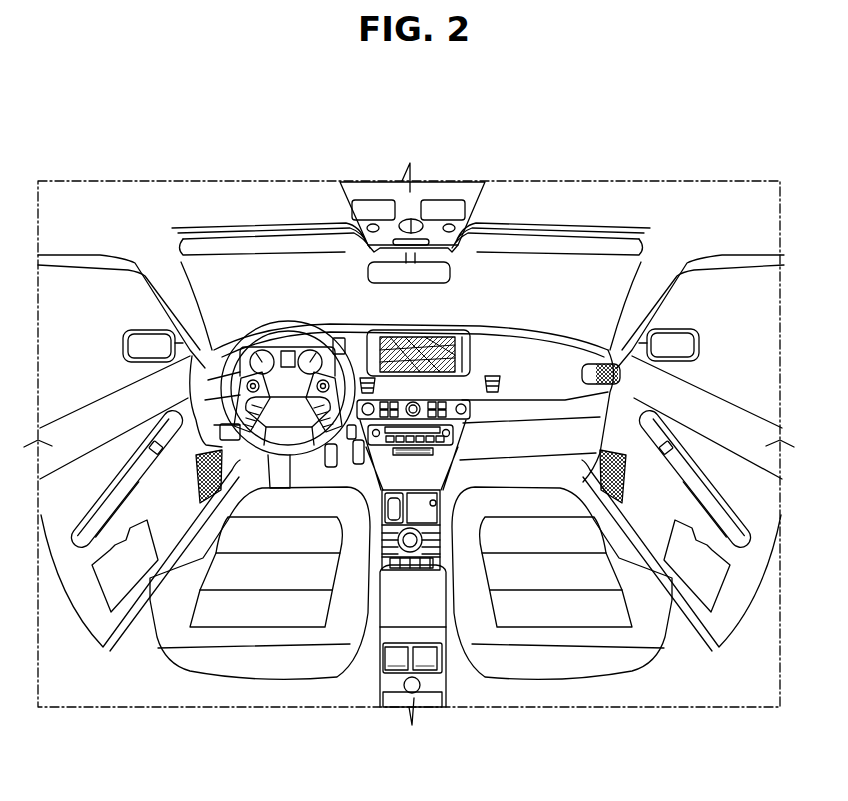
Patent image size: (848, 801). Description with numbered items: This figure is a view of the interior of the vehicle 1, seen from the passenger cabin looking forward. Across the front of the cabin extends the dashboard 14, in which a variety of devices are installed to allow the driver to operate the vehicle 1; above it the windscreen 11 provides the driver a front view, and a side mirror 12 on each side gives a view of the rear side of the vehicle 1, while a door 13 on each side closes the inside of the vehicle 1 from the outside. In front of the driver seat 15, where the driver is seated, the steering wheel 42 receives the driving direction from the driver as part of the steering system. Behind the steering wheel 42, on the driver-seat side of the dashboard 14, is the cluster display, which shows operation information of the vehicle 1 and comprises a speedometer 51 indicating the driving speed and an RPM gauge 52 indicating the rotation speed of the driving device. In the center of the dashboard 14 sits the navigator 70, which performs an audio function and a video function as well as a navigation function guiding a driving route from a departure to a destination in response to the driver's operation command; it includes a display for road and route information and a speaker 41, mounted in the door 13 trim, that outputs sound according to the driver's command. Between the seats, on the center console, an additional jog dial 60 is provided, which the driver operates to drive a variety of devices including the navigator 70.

The vehicle 1 is at (130, 162).
The windscreen 11 is at (245, 270).
The side mirror 12 is at (133, 347).
The door 13 is at (63, 503).
The dashboard 14 is at (556, 364).
The driver seat 15 is at (262, 672).
The speaker 41 is at (142, 492).
The steering wheel 42 is at (344, 362).
The speedometer 51 is at (236, 342).
The revolutions per minute (RPM) gauge 52 is at (296, 368).
The jog dial 60 is at (418, 520).
The navigator 70 is at (448, 330).